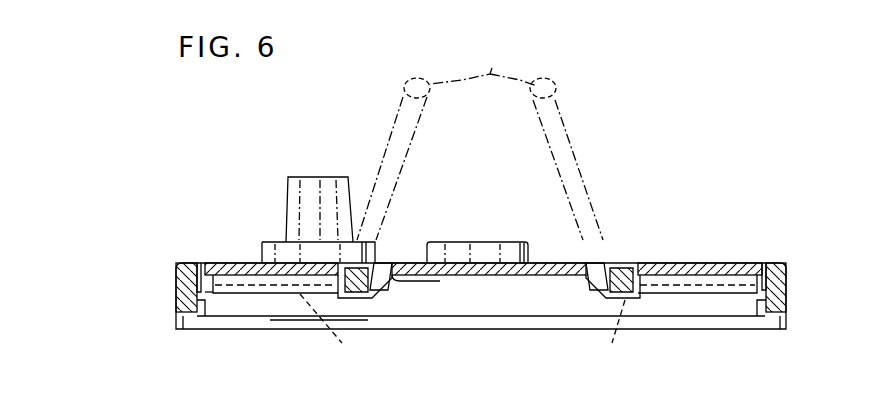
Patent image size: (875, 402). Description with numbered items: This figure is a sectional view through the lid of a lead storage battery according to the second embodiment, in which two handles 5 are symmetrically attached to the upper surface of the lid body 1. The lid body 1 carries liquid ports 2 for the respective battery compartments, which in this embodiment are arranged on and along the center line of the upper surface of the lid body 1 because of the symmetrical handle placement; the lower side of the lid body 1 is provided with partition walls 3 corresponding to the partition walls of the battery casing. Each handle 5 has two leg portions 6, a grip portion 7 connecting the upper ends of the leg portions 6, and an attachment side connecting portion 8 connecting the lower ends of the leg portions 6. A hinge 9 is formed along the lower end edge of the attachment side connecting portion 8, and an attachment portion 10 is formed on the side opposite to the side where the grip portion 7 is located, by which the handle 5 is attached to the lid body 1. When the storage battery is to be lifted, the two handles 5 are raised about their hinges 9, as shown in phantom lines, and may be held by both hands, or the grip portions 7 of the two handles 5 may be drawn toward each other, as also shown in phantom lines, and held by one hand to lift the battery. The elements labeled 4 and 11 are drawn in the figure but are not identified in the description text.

The lid body 1 is at (749, 236).
The liquid ports 2 is at (473, 241).
The partition walls 3 is at (678, 305).
The cylindrical projection 4 is at (313, 176).
The handle 5 is at (415, 143).
The leg portions 6 is at (392, 138).
The grip portion 7 is at (178, 281).
The attachment side connecting portion 8 is at (357, 271).
The hinge 9 is at (375, 262).
The attachment portion 10 is at (386, 300).
The hole 11 is at (197, 262).